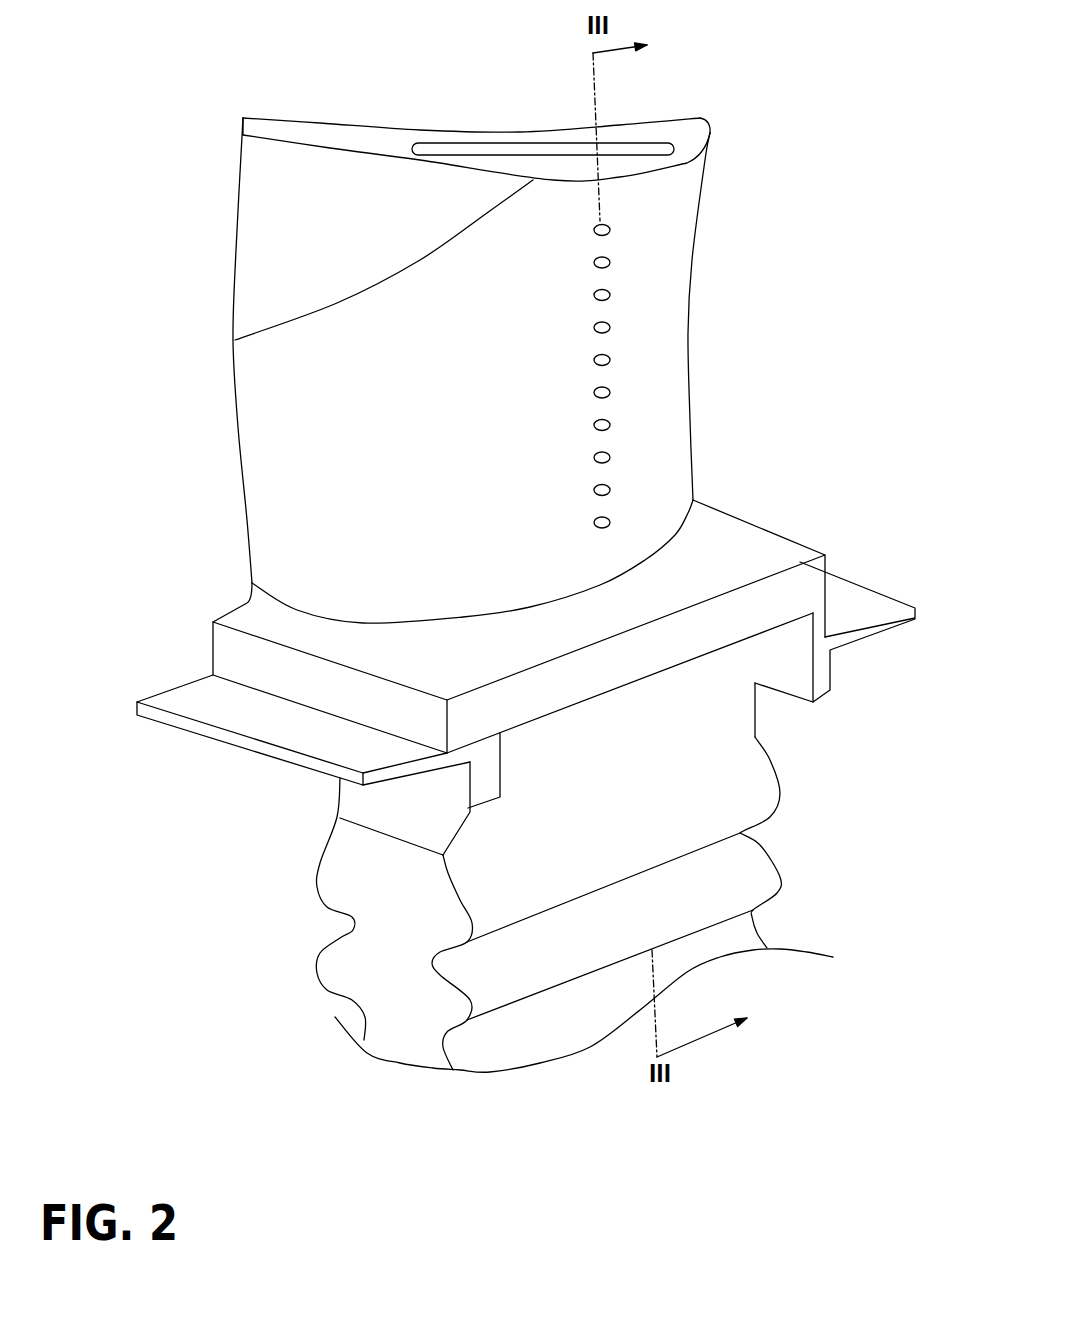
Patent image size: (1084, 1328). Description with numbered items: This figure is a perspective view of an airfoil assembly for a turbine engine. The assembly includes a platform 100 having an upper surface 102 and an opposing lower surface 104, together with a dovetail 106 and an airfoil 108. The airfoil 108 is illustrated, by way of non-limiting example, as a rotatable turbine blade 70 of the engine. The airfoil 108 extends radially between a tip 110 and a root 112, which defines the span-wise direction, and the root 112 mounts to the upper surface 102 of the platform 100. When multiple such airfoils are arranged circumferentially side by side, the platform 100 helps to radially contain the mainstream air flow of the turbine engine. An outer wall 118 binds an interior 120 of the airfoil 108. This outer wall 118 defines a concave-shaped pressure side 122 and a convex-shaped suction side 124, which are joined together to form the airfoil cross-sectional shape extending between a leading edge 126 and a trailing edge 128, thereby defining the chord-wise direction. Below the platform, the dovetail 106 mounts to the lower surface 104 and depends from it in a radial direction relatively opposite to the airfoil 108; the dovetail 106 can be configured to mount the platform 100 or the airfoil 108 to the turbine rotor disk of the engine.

The rotatable turbine blade 70 is at (637, 100).
The platform 100 is at (785, 530).
The upper surface 102 is at (223, 613).
The lower surface 104 is at (748, 635).
The dovetail 106 is at (786, 875).
The airfoil 108 is at (693, 417).
The tip 110 is at (495, 138).
The root 112 is at (300, 630).
The outer wall 118 is at (693, 167).
The interior 120 is at (440, 143).
The pressure side 122 is at (563, 128).
The suction side 124 is at (236, 341).
The leading edge 126 is at (690, 333).
The trailing edge 128 is at (238, 423).